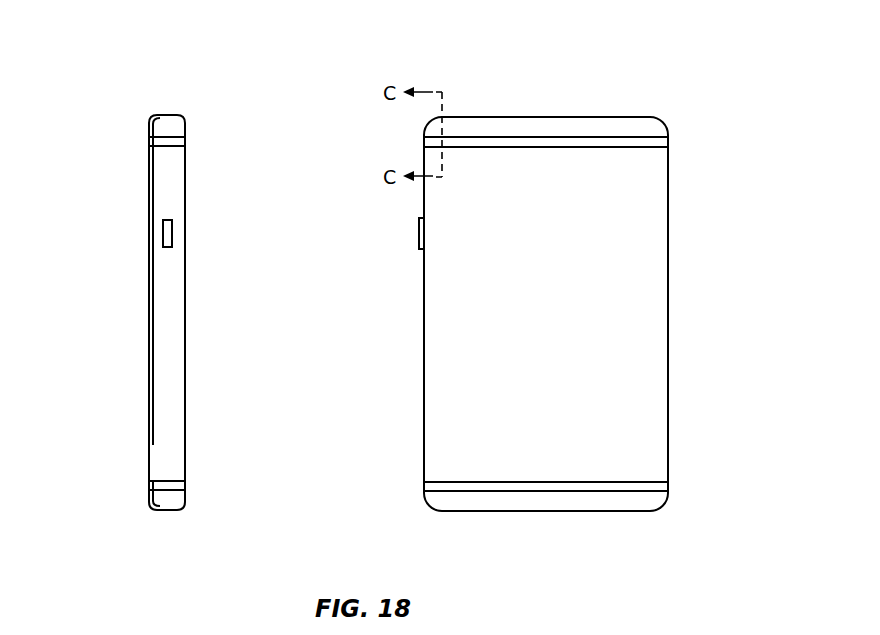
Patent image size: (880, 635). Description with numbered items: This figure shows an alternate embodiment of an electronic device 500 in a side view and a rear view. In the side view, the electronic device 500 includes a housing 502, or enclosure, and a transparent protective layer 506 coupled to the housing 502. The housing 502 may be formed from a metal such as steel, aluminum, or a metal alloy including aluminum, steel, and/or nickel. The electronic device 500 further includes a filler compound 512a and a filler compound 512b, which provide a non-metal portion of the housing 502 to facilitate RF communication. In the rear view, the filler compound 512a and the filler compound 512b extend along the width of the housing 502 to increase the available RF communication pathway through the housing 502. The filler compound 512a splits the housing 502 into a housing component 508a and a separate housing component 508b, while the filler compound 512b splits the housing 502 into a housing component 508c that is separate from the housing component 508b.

The electronic device 500 is at (199, 82).
The housing 502 is at (186, 350).
The transparent protective layer 506 is at (148, 318).
The housing component 508a is at (582, 117).
The housing component 508b is at (571, 317).
The housing component 508c is at (622, 512).
The filler compound 512a is at (185, 146).
The filler compound 512b is at (185, 490).